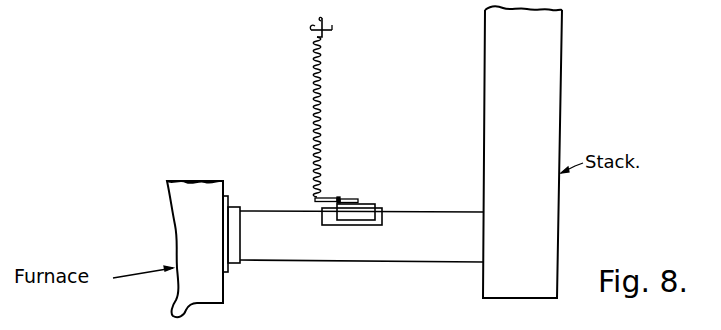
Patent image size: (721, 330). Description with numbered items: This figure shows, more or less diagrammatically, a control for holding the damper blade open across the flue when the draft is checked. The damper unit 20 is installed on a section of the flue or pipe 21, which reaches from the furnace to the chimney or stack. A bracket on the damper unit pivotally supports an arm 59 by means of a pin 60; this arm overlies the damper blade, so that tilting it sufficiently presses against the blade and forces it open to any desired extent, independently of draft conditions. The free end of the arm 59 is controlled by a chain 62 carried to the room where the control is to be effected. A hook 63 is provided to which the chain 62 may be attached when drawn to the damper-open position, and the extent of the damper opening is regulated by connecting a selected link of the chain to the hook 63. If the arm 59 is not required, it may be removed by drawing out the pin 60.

The damper unit 20 is at (381, 206).
The flue or pipe 21 is at (361, 236).
The arm 59 is at (350, 200).
The pin 60 is at (343, 182).
The chain 62 is at (319, 97).
The hook 63 is at (325, 42).